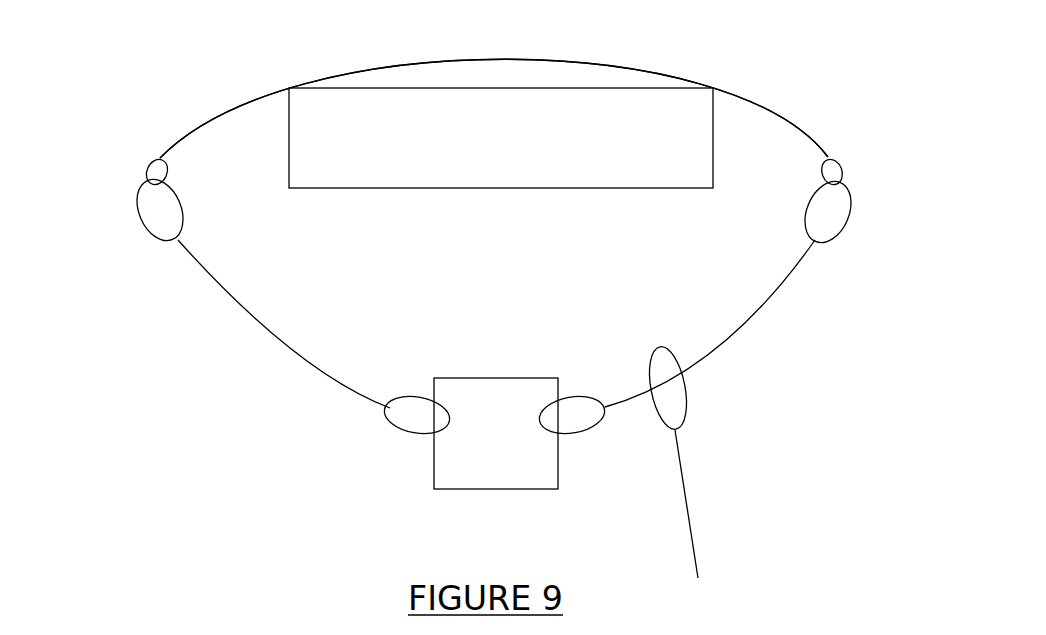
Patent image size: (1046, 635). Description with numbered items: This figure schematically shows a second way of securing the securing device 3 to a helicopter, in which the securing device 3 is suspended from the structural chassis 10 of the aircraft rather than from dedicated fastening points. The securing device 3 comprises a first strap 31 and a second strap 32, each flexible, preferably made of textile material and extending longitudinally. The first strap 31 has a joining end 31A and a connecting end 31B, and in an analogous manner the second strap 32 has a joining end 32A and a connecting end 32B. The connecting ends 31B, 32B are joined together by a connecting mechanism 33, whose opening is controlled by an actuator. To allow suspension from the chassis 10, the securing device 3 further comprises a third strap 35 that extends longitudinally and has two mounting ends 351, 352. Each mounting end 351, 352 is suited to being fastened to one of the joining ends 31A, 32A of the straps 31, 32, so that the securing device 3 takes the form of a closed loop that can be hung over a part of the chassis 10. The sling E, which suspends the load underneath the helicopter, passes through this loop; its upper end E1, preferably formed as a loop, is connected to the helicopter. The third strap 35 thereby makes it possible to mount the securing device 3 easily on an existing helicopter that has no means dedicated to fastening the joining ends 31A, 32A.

The securing device 3 is at (863, 101).
The structural chassis 10 is at (622, 88).
The third strap 35 is at (757, 97).
The mounting end 351 is at (144, 165).
The mounting end 352 is at (843, 162).
The first strap 31 is at (248, 320).
The joining end 31A is at (141, 212).
The connecting end 31B is at (410, 431).
The second strap 32 is at (772, 290).
The joining end 32A is at (849, 214).
The connecting end 32B is at (574, 433).
The connecting mechanism 33 is at (525, 378).
The sling E is at (688, 492).
The upper end E1 is at (685, 400).